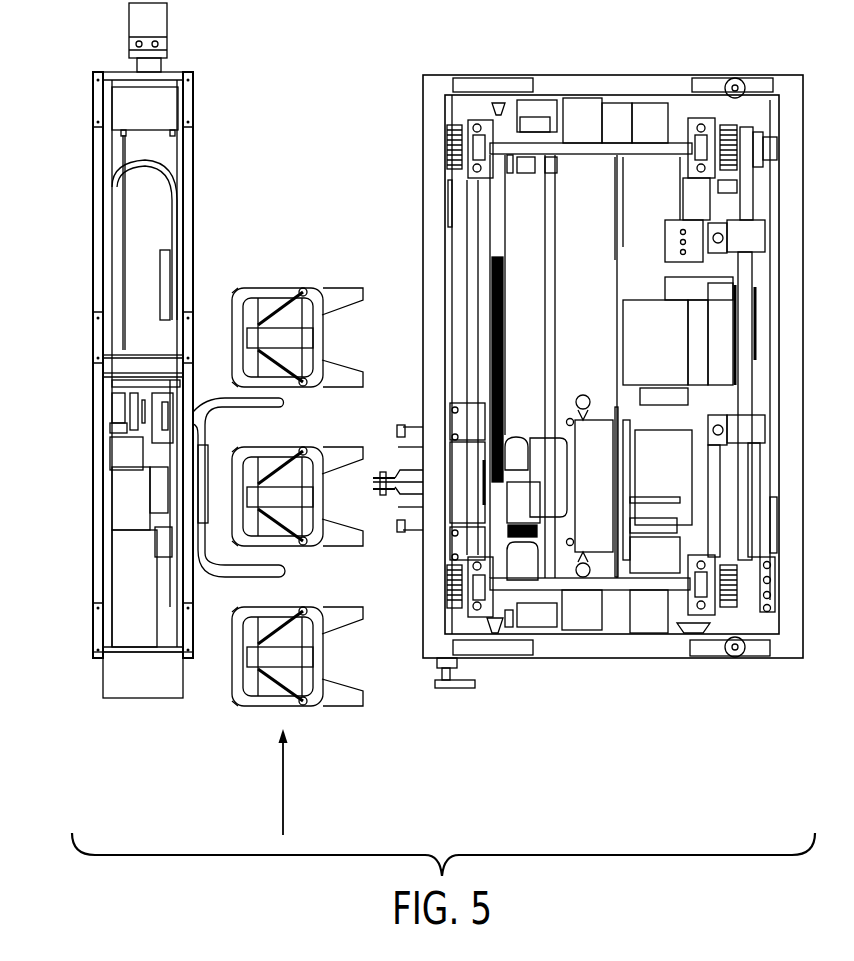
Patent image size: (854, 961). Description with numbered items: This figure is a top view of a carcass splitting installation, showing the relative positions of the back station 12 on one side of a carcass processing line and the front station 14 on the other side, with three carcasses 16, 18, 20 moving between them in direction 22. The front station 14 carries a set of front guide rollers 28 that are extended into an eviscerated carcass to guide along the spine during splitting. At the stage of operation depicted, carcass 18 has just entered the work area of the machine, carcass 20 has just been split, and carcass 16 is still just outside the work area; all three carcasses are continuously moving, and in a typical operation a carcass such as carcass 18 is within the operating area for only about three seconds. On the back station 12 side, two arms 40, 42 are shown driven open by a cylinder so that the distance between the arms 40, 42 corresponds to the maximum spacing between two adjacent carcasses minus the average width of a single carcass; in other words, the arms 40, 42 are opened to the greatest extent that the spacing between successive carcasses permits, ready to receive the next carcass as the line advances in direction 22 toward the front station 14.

The back station 12 is at (78, 233).
The front station 14 is at (578, 74).
The carcass 16 is at (340, 706).
The carcass 18 is at (343, 550).
The carcass 20 is at (270, 288).
The direction 22 is at (285, 772).
The front guide rollers 28 is at (385, 470).
The arm 40 is at (262, 577).
The arm 42 is at (232, 406).